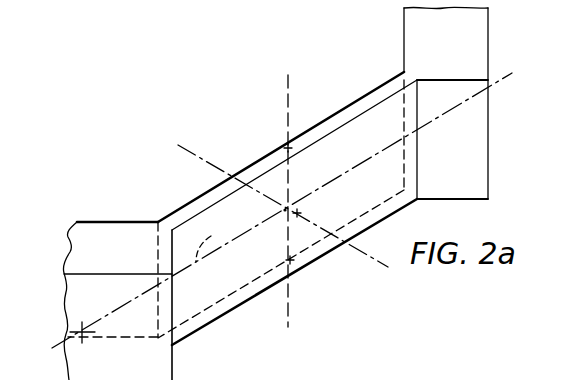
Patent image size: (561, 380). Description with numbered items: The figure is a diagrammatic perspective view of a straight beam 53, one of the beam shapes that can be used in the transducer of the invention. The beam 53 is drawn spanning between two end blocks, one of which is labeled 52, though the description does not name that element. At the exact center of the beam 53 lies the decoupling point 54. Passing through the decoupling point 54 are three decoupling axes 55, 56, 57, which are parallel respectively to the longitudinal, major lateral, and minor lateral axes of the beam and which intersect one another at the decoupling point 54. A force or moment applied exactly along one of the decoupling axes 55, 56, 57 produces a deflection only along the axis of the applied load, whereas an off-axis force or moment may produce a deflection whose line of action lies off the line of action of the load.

The support block 52 is at (469, 135).
The straight beam 53 is at (336, 104).
The decoupling point 54 is at (284, 212).
The decoupling axis 55 is at (215, 238).
The decoupling axis 56 is at (287, 95).
The decoupling axis 57 is at (192, 152).